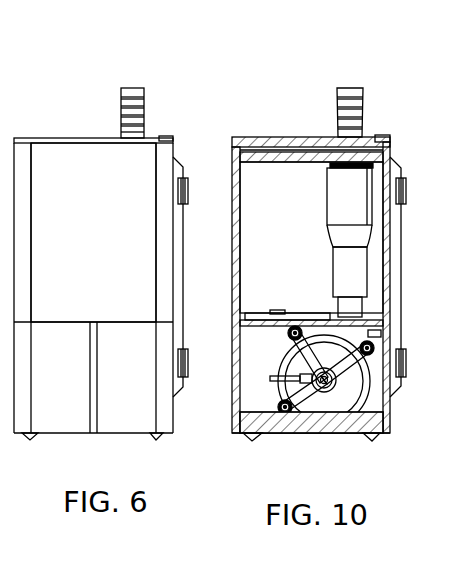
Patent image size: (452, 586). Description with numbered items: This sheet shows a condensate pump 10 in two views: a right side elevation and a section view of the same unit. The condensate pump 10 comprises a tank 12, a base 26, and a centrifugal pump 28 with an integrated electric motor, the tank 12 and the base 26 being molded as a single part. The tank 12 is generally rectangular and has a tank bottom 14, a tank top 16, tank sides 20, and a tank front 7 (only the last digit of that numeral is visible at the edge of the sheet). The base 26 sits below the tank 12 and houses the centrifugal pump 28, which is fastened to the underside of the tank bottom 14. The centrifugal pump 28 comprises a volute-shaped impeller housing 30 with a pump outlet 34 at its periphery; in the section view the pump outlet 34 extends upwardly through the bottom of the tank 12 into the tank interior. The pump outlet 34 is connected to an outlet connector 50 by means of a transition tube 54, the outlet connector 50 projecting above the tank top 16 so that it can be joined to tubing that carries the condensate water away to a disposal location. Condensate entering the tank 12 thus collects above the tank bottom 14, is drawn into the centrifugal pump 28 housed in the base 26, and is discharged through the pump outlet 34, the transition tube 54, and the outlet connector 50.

In FIG. 6, the condensate pump 10 is at (0, 582).
In FIG. 6, the tank 12 is at (50, 130).
In FIG. 10, the tank 12 is at (256, 129).
In FIG. 10, the tank bottom 14 is at (258, 319).
In FIG. 6, the tank top 16 is at (83, 137).
In FIG. 10, the tank top 16 is at (307, 137).
In FIG. 6, the partially visible numeral (17) 7 is at (5, 116).
In FIG. 6, the tank sides 20 is at (133, 185).
In FIG. 10, the tank sides 20 is at (262, 180).
In FIG. 6, the base 26 is at (44, 440).
In FIG. 10, the base 26 is at (255, 443).
In FIG. 10, the centrifugal pump 28 is at (318, 413).
In FIG. 10, the volute-shaped impeller housing 30 is at (338, 398).
In FIG. 10, the pump outlet 34 is at (348, 308).
In FIG. 6, the outlet connector 50 is at (133, 88).
In FIG. 10, the outlet connector 50 is at (348, 88).
In FIG. 10, the transition tube 54 is at (327, 208).